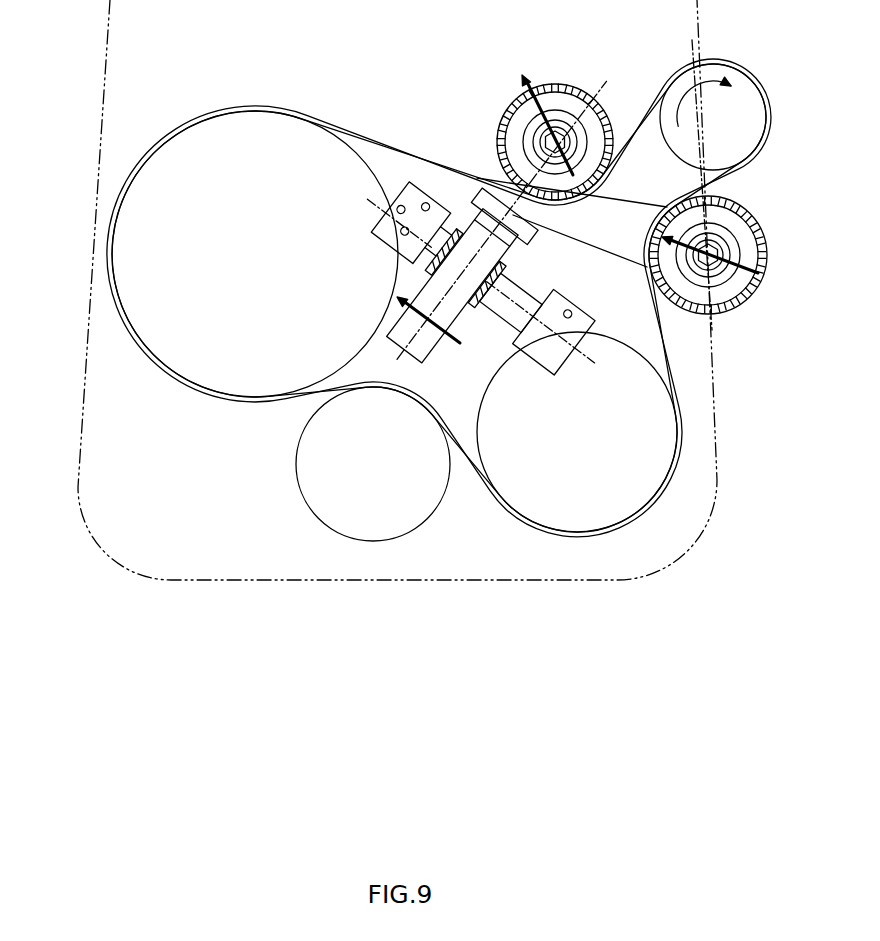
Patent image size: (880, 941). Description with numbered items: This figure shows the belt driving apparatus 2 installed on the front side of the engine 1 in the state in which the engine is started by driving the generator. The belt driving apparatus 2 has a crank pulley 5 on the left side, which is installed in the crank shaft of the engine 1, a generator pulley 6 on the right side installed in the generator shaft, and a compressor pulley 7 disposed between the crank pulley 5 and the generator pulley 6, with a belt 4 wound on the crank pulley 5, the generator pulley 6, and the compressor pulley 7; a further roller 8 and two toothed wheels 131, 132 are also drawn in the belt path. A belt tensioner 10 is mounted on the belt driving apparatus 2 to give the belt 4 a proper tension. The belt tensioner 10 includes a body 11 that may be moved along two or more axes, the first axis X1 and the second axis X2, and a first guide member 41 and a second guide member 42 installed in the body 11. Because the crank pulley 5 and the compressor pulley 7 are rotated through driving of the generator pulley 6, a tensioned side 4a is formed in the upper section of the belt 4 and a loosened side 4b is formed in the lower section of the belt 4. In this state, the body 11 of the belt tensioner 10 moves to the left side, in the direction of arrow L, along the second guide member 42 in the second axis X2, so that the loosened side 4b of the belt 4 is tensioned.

The engine 1 is at (85, 378).
The belt driving apparatus 2 is at (343, 104).
The belt 4 is at (279, 399).
The tensioned side 4a is at (410, 133).
The loosened side 4b is at (692, 374).
The crank pulley 5 is at (128, 253).
The generator pulley 6 is at (745, 120).
The compressor pulley 7 is at (663, 430).
The roller 8 is at (368, 525).
The belt tensioner 10 is at (482, 160).
The body 11 is at (400, 332).
The first guide member 41 is at (484, 292).
The second guide member 42 is at (528, 298).
The gear 131 is at (765, 256).
The gear 132 is at (553, 84).
The direction of arrow L is at (436, 331).
The first axis X1 is at (424, 332).
The second axis X2 is at (579, 345).